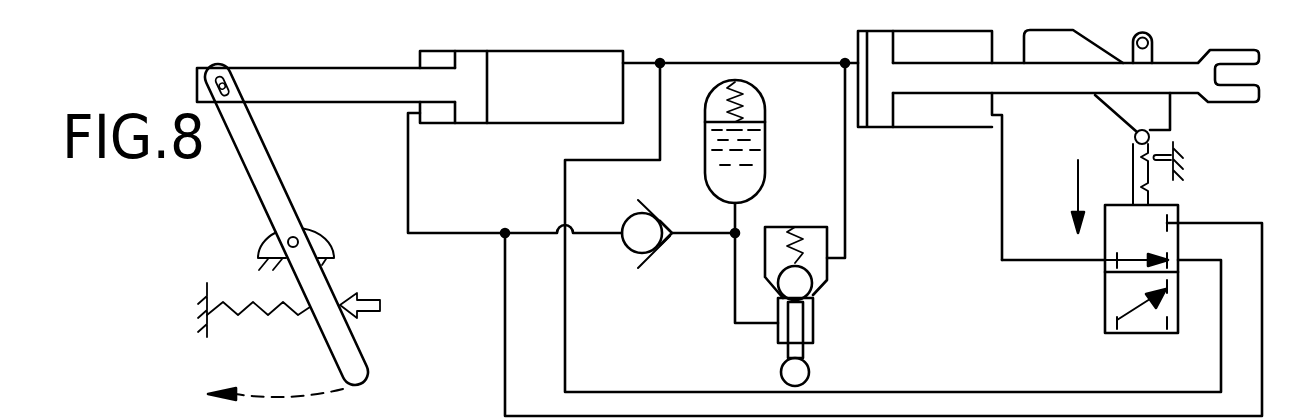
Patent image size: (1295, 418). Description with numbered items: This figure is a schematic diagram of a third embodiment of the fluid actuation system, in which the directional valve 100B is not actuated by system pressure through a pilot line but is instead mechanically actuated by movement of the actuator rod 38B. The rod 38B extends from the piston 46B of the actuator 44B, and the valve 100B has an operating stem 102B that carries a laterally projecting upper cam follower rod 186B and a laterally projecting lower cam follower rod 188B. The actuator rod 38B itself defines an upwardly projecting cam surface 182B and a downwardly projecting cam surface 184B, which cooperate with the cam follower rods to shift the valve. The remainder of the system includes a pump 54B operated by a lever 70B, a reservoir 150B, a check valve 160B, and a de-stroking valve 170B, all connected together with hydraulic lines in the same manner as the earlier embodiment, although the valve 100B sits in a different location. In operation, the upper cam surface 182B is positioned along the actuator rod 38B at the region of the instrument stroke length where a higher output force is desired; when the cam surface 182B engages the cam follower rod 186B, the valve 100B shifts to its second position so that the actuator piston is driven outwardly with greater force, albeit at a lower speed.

The lever 70B is at (256, 152).
The pump 54B is at (628, 50).
The piston 46B is at (877, 44).
The actuator 44B is at (1015, 22).
The actuator rod 38B is at (1015, 77).
The upwardly projecting cam surface 182B is at (1103, 33).
The downwardly projecting cam surface 184B is at (1110, 110).
The upper cam follower rod 186B is at (1152, 42).
The lower cam follower rod 188B is at (1150, 136).
The operating stem 102B is at (1135, 167).
The directional valve 100B is at (1100, 296).
The de-stroking valve 170B is at (822, 298).
The reservoir 150B is at (772, 112).
The check valve 160B is at (682, 176).